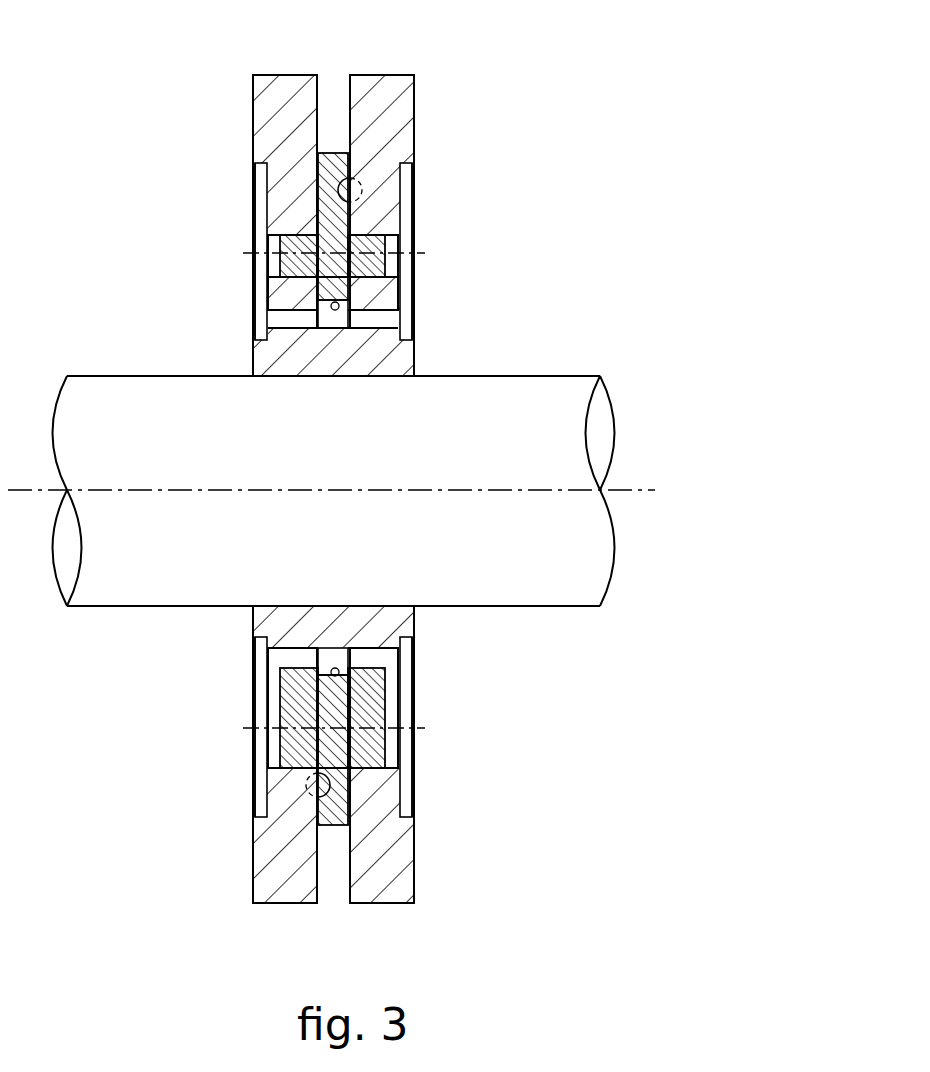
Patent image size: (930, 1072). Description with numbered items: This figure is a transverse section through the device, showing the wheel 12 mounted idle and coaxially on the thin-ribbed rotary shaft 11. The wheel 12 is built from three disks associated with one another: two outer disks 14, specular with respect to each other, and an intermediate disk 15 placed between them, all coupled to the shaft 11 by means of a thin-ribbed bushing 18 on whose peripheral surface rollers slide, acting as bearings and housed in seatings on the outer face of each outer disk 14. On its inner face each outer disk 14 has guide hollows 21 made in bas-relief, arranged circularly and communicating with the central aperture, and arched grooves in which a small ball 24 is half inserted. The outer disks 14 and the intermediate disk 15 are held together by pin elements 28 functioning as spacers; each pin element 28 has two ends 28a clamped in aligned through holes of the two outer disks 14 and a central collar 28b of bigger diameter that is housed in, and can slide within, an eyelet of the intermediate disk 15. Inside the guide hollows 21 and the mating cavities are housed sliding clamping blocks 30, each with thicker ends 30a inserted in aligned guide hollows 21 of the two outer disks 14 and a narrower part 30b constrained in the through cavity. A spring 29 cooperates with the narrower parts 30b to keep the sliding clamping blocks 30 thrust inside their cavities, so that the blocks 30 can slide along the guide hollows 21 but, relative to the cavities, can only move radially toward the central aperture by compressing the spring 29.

The rotary shaft 11 is at (567, 586).
The wheel 12 is at (431, 99).
The outer disk 14 is at (270, 882).
The intermediate disk 15 is at (337, 818).
The thin-ribbed bushing 18 is at (400, 354).
The guide hollow 21 is at (270, 660).
The small ball 24 is at (344, 188).
The pin element 28 is at (354, 307).
The end 28a is at (285, 265).
The collar 28b is at (356, 209).
The spring 29 is at (322, 677).
The sliding clamping block 30 is at (386, 660).
The end 30a is at (290, 706).
The narrower part 30b is at (323, 760).